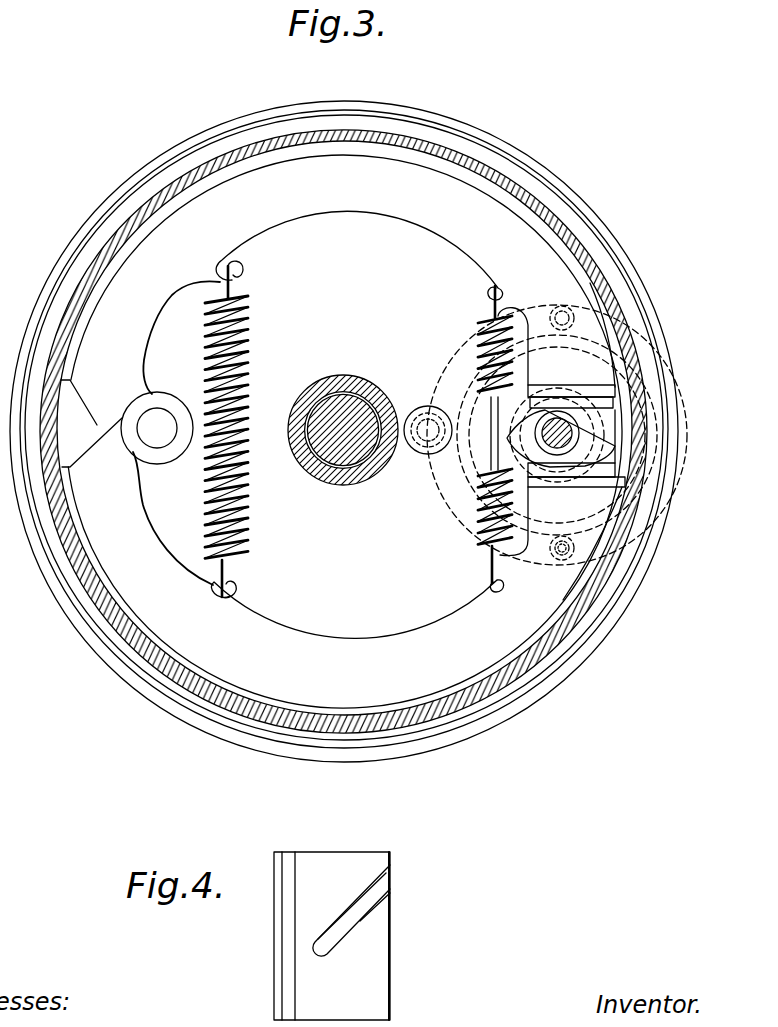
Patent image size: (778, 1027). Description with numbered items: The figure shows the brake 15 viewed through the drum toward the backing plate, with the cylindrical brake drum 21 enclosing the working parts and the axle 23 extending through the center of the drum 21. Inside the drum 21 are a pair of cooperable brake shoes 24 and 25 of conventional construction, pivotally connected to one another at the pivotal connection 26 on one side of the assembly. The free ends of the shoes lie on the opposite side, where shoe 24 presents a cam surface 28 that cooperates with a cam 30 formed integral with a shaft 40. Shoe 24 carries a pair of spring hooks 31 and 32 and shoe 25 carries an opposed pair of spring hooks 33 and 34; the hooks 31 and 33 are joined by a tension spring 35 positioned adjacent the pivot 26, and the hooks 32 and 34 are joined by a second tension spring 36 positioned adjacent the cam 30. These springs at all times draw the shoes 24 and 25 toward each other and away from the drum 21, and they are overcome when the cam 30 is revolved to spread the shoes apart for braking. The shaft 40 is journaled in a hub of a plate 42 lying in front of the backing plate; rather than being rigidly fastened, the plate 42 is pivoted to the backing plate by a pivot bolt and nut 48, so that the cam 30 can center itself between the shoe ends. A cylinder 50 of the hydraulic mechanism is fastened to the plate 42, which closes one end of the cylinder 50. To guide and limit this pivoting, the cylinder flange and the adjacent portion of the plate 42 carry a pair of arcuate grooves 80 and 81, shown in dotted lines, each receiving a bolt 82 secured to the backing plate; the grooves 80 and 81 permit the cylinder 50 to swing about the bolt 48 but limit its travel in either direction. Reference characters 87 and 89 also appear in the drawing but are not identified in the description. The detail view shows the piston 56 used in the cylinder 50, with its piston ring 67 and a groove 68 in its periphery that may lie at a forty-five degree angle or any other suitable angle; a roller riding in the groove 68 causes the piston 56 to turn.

In FIG. 3, the brake 15 is at (501, 133).
In FIG. 3, the drum ring 87 is at (384, 150).
In FIG. 3, the brake drum 21 is at (527, 197).
In FIG. 3, the brake shoe 24 is at (413, 208).
In FIG. 3, the brake shoe 25 is at (327, 643).
In FIG. 3, the pivotal connection 26 is at (156, 428).
In FIG. 3, the spring 35 is at (249, 370).
In FIG. 3, the spring hook 31 is at (241, 272).
In FIG. 3, the spring hook 33 is at (238, 590).
In FIG. 3, the spring 36 is at (478, 340).
In FIG. 3, the plate 42 is at (440, 497).
In FIG. 3, the spring hook 32 is at (487, 292).
In FIG. 3, the spring hook 34 is at (486, 581).
In FIG. 3, the cam surface 28 is at (580, 390).
In FIG. 3, the lower shoe end bar 89 is at (598, 472).
In FIG. 3, the cam 30 is at (618, 443).
In FIG. 3, the shaft 40 is at (557, 458).
In FIG. 3, the cylinder 50 is at (600, 527).
In FIG. 3, the arcuate groove 80 is at (570, 338).
In FIG. 3, the bolt 82 is at (560, 309).
In FIG. 3, the arcuate groove 81 is at (551, 560).
In FIG. 3, the axle 23 is at (348, 402).
In FIG. 3, the pivot bolt and nut 48 is at (420, 453).
In FIG. 4, the piston 56 is at (350, 852).
In FIG. 4, the piston ring 67 is at (290, 856).
In FIG. 4, the groove 68 is at (364, 911).